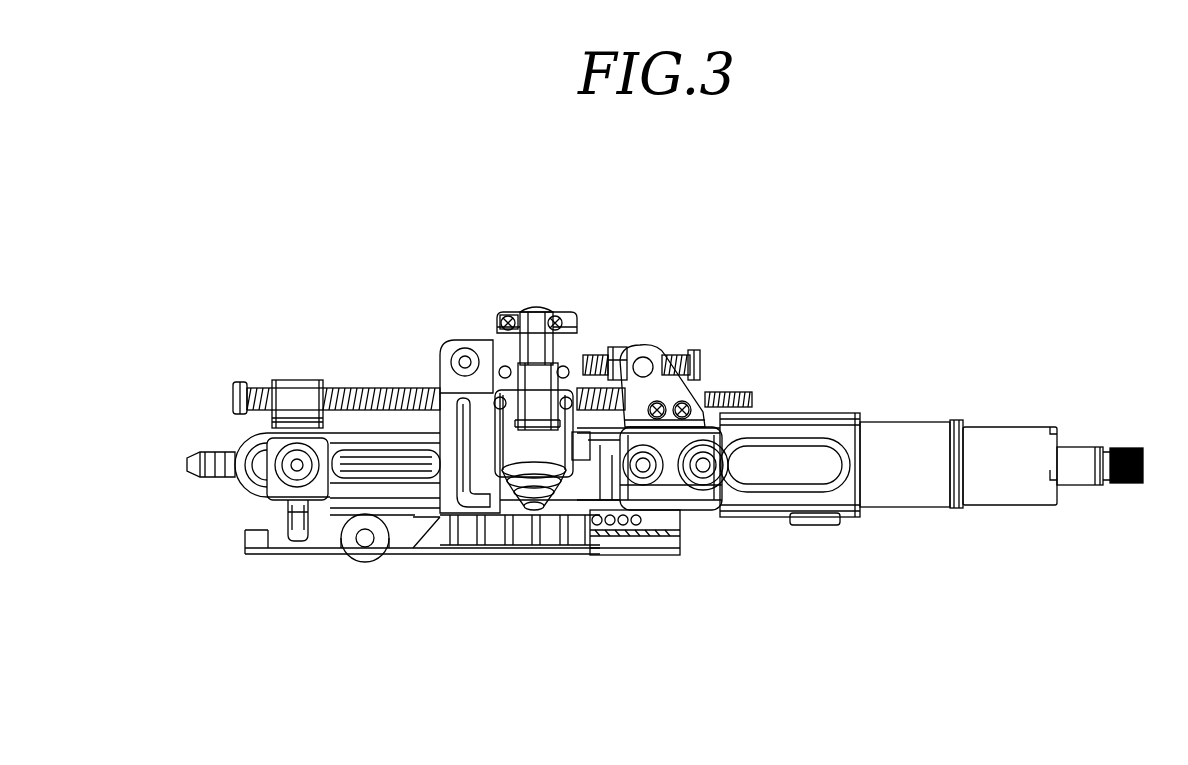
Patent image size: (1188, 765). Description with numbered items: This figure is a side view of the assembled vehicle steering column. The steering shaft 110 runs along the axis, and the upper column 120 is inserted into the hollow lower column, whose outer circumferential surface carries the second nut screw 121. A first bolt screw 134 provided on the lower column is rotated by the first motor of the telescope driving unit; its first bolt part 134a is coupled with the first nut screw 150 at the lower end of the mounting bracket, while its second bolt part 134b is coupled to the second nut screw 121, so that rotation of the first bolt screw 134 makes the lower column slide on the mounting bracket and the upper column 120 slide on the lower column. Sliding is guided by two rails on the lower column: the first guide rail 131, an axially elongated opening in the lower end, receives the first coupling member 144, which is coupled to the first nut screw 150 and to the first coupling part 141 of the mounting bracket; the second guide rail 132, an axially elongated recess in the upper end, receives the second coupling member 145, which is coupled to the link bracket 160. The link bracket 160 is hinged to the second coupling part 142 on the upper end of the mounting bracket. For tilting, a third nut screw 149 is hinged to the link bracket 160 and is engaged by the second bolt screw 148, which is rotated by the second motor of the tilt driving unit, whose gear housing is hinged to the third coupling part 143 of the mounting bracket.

The steering shaft 110 is at (1082, 452).
The upper column 120 is at (1010, 435).
The second nut screw 121 is at (705, 382).
The first guide rail 131 is at (370, 520).
The second guide rail 132 is at (780, 465).
The first bolt screw 134 is at (410, 378).
The first bolt part 134a is at (357, 388).
The second bolt part 134b is at (742, 390).
The first coupling part 141 is at (255, 488).
The second coupling part 142 is at (630, 512).
The third coupling part 143 is at (455, 337).
The first coupling member 144 is at (295, 475).
The second coupling member 145 is at (705, 470).
The second bolt screw 148 is at (590, 345).
The third nut screw 149 is at (617, 348).
The first nut screw 150 is at (288, 382).
The link bracket 160 is at (665, 458).